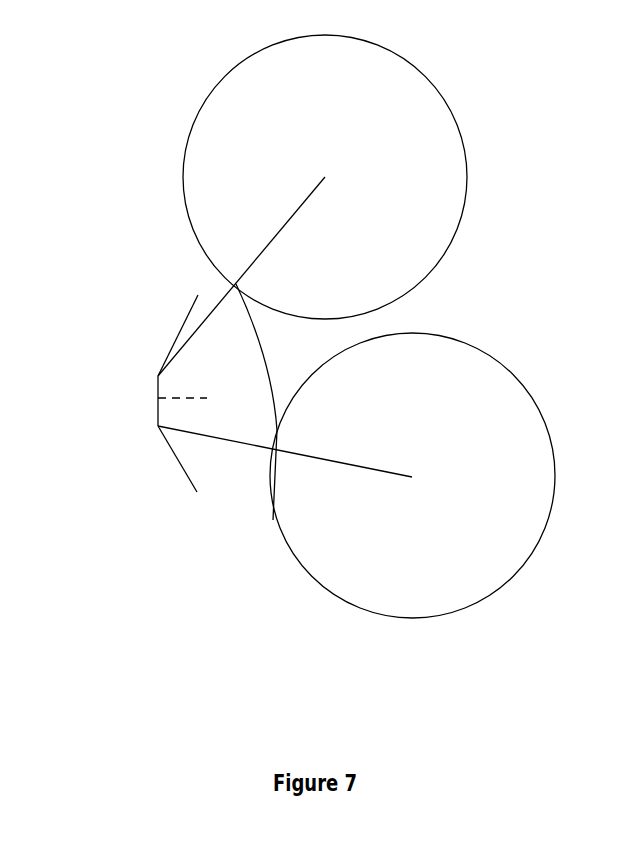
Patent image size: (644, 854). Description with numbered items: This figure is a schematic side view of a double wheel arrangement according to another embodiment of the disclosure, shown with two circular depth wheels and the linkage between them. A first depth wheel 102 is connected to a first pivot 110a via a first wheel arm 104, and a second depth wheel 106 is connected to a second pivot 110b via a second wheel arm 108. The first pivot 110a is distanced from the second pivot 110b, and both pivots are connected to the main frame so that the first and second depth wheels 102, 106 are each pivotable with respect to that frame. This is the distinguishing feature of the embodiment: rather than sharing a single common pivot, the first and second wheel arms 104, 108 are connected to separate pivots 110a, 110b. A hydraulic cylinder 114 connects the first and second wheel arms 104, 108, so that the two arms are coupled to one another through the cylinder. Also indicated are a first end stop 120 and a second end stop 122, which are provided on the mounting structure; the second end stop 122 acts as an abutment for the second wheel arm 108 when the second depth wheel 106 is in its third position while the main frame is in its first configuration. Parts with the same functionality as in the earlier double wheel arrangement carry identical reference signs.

The first depth wheel 102 is at (442, 488).
The first wheel arm 104 is at (285, 504).
The second depth wheel 106 is at (376, 177).
The second wheel arm 108 is at (218, 276).
The first pivot 110a is at (110, 419).
The second pivot 110b is at (157, 375).
The hydraulic cylinder 114 is at (368, 390).
The first end stop 120 is at (137, 475).
The second end stop 122 is at (122, 332).